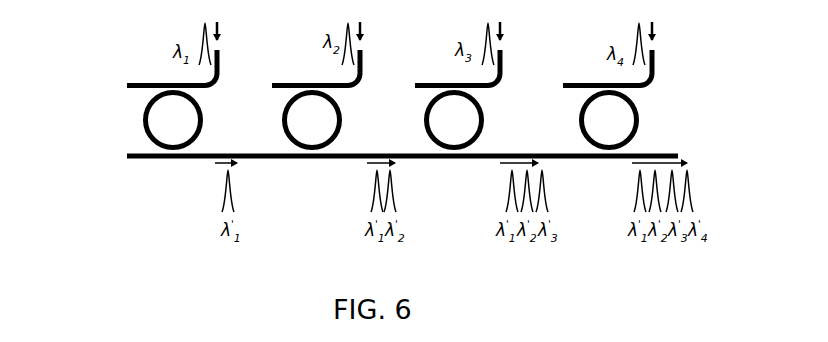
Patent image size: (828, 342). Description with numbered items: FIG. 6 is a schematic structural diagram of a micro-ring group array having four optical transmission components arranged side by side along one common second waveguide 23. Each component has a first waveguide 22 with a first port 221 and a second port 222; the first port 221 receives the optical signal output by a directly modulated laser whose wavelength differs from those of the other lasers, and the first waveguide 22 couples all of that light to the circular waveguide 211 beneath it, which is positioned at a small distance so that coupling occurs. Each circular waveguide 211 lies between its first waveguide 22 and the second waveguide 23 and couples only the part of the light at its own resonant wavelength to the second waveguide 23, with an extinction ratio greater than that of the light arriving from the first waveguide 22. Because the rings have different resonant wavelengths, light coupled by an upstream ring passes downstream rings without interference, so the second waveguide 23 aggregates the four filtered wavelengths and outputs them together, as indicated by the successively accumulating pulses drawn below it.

The first waveguide 22 is at (181, 45).
The first port 221 is at (220, 43).
The second port 222 is at (132, 83).
The circular waveguide 211 is at (143, 117).
The second waveguide 23 is at (150, 158).